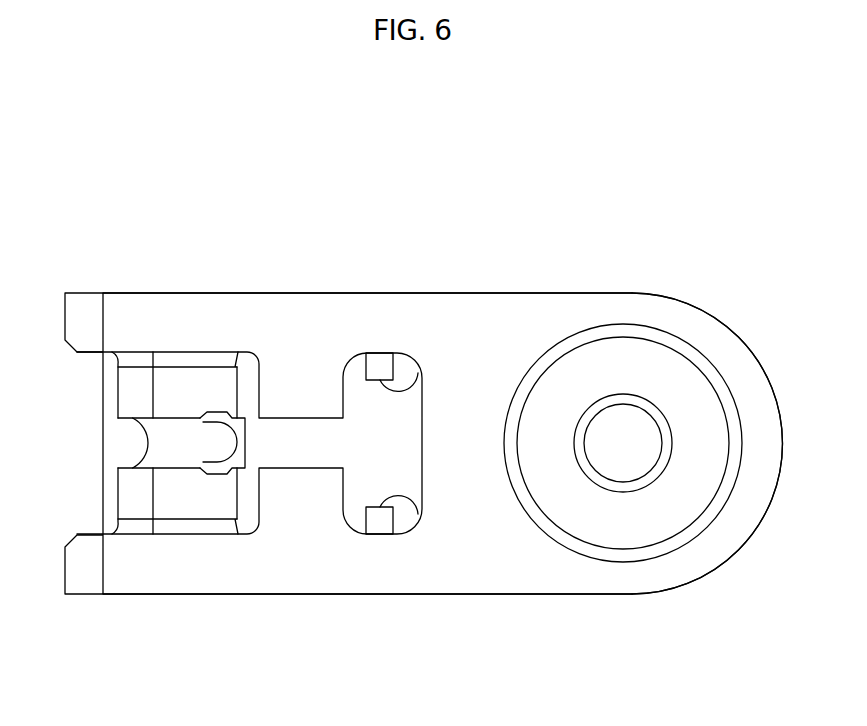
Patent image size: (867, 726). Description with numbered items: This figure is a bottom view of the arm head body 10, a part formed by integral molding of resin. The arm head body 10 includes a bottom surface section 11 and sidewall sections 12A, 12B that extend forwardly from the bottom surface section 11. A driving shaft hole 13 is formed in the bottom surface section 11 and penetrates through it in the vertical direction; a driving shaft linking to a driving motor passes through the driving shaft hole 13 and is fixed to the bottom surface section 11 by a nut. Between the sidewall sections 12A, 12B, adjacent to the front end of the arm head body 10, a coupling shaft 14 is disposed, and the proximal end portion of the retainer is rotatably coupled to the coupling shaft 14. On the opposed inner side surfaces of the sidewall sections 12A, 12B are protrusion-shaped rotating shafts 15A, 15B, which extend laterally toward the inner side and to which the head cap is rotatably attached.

The arm head body 10 is at (623, 226).
The bottom surface section 11 is at (722, 565).
The sidewall section 12A is at (205, 594).
The sidewall section 12B is at (233, 293).
The driving shaft hole 13 is at (658, 437).
The coupling shaft 14 is at (118, 388).
The rotating shaft 15A is at (395, 521).
The rotating shaft 15B is at (395, 366).